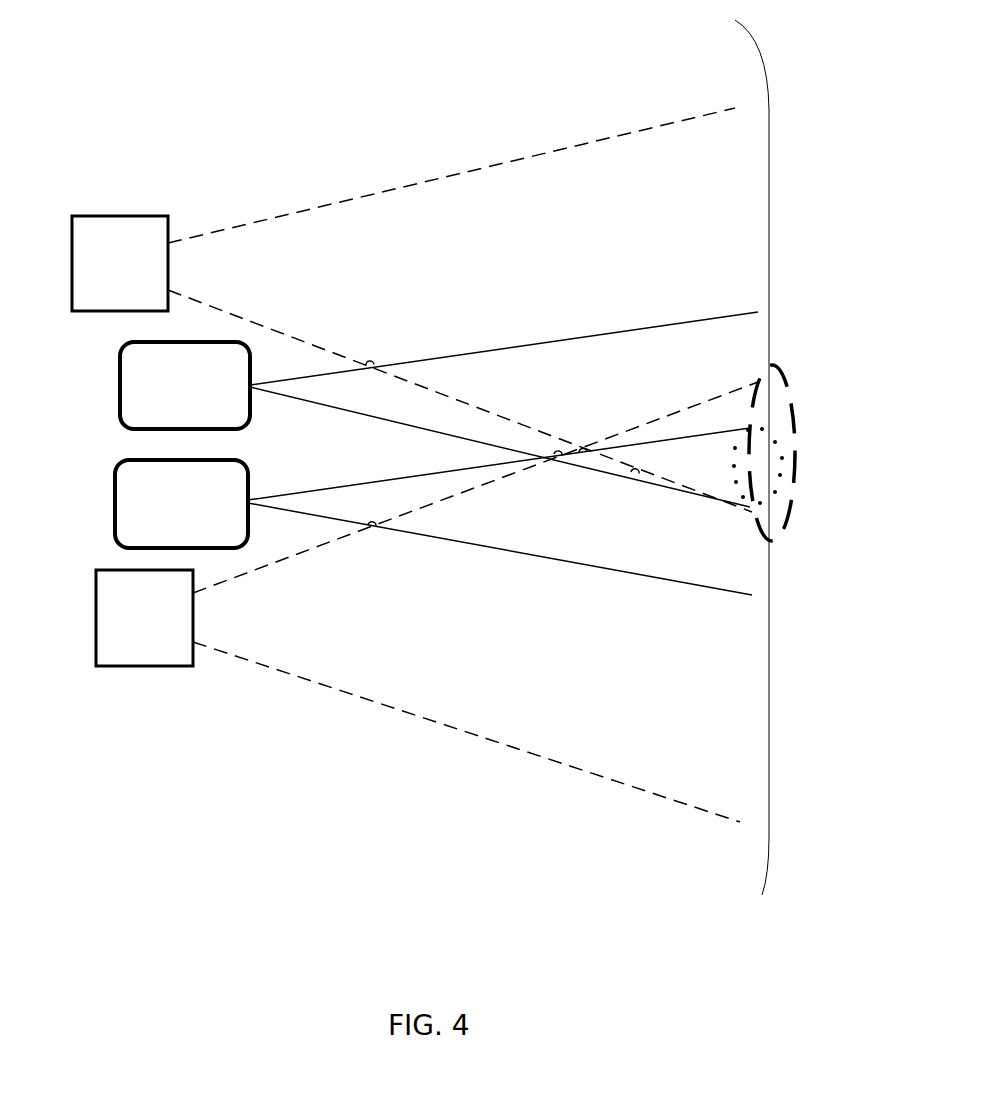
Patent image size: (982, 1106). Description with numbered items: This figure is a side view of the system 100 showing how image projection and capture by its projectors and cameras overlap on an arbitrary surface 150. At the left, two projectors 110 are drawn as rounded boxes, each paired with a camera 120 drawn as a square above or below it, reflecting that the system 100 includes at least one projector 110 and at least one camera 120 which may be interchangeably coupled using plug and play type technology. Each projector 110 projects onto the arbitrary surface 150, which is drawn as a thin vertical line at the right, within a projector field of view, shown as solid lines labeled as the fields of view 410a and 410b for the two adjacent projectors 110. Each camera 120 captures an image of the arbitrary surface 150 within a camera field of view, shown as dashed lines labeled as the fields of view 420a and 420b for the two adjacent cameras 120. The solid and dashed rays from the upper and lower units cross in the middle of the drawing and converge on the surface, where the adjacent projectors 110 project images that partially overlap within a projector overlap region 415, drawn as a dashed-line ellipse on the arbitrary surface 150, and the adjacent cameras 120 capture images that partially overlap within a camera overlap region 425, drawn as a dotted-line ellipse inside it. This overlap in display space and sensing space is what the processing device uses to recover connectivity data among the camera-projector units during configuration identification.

The system 100 is at (278, 88).
The projector 110 is at (120, 383).
The camera 120 is at (120, 215).
The arbitrary surface 150 is at (768, 160).
The projector field of view 410a is at (712, 353).
The projector field of view 410b is at (687, 542).
The projector overlap region 415 is at (785, 463).
The camera field of view 420a is at (587, 188).
The camera field of view 420b is at (570, 729).
The camera overlap region 425 is at (790, 503).